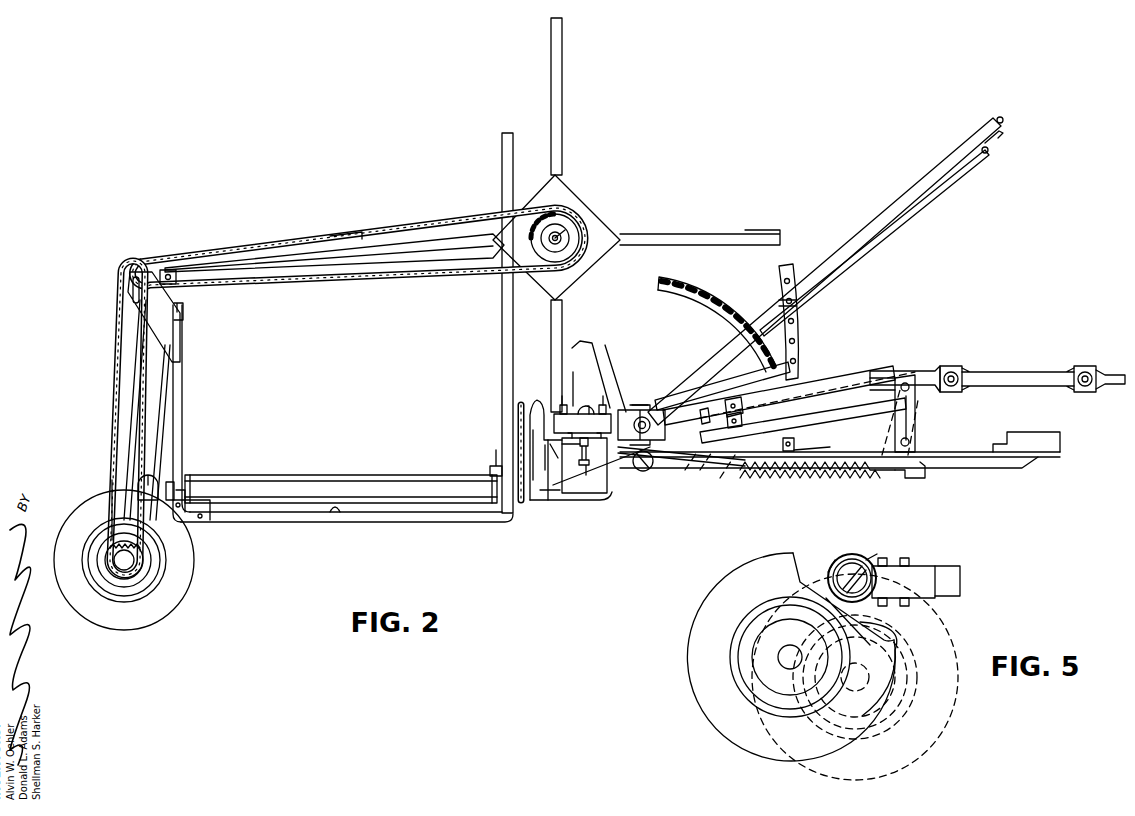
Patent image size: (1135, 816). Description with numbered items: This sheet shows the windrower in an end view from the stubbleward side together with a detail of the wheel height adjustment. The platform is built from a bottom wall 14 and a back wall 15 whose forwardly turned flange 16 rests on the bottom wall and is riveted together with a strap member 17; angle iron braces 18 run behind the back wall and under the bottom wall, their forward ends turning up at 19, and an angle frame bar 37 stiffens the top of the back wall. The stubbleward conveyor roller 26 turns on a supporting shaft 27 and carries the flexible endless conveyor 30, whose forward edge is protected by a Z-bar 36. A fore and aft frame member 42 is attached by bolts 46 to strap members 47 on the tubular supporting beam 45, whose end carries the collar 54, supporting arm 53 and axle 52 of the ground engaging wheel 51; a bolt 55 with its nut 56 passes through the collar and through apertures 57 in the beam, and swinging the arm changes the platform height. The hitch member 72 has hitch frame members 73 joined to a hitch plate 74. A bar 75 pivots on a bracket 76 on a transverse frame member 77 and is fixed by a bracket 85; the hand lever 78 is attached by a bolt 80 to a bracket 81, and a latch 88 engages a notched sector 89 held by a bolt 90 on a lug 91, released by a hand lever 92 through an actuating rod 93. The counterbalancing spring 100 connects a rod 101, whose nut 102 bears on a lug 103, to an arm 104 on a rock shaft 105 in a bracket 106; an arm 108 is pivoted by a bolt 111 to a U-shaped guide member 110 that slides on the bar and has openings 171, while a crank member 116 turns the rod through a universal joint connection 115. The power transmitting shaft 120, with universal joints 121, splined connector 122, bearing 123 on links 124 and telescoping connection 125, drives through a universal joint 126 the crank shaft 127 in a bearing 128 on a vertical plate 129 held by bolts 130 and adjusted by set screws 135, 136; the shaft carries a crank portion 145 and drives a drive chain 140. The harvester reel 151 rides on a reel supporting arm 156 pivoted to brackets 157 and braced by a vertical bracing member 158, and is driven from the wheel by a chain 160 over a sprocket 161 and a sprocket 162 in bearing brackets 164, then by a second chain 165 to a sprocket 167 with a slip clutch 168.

In FIG. 2, the bottom wall 14 is at (335, 516).
In FIG. 2, the back wall 15 is at (184, 400).
In FIG. 2, the flange 16 is at (205, 524).
In FIG. 2, the strap member 17 is at (188, 503).
In FIG. 2, the angle iron braces 18 is at (180, 430).
In FIG. 2, the upturned brace ends 19 is at (516, 505).
In FIG. 2, the conveyor roller 26 is at (418, 490).
In FIG. 2, the supporting shaft 27 is at (160, 498).
In FIG. 2, the flexible endless conveyor 30 is at (280, 474).
In FIG. 2, the Z-bar 36 is at (496, 452).
In FIG. 2, the angle frame bar 37 is at (184, 310).
In FIG. 2, the frame member 42 is at (545, 503).
In FIG. 5, the frame member 42 is at (940, 580).
In FIG. 5, the tubular supporting beam 45 is at (846, 566).
In FIG. 5, the bolts 46 is at (902, 556).
In FIG. 5, the strap members 47 is at (910, 566).
In FIG. 2, the ground engaging wheel 51 is at (170, 600).
In FIG. 5, the ground engaging wheel 51 is at (840, 740).
In FIG. 2, the axle 52 is at (125, 565).
In FIG. 5, the axle 52 is at (778, 660).
In FIG. 5, the supporting arm 53 is at (885, 630).
In FIG. 2, the collar 54 is at (150, 482).
In FIG. 5, the collar 54 is at (835, 562).
In FIG. 5, the bolt 55 is at (830, 580).
In FIG. 5, the nut 56 is at (872, 558).
In FIG. 5, the apertures 57 is at (903, 582).
In FIG. 2, the hitch member 72 is at (973, 476).
In FIG. 2, the hitch frame members 73 is at (990, 465).
In FIG. 2, the hitch plate 74 is at (1050, 432).
In FIG. 2, the bar 75 is at (720, 388).
In FIG. 2, the bracket 76 is at (552, 444).
In FIG. 2, the transverse frame member 77 is at (566, 448).
In FIG. 2, the hand lever 78 is at (862, 220).
In FIG. 2, the bolt 80 is at (790, 303).
In FIG. 2, the bracket 81 is at (798, 340).
In FIG. 2, the bracket 85 is at (660, 468).
In FIG. 2, the latch 88 is at (700, 306).
In FIG. 2, the notched sector 89 is at (690, 285).
In FIG. 2, the bolt 90 is at (796, 442).
In FIG. 2, the lug 91 is at (818, 446).
In FIG. 2, the hand lever 92 is at (1004, 134).
In FIG. 2, the actuating rod 93 is at (958, 163).
In FIG. 2, the counterbalancing spring 100 is at (830, 478).
In FIG. 2, the rod 101 is at (686, 474).
In FIG. 2, the nut 102 is at (718, 475).
In FIG. 2, the lug 103 is at (722, 470).
In FIG. 2, the arm 104 is at (908, 478).
In FIG. 2, the rock shaft 105 is at (898, 385).
In FIG. 2, the bracket 106 is at (914, 412).
In FIG. 2, the arm 108 is at (808, 418).
In FIG. 2, the U-shaped guide member 110 is at (706, 426).
In FIG. 2, the bolt 111 is at (740, 428).
In FIG. 2, the universal joint connection 115 is at (643, 471).
In FIG. 2, the crank member 116 is at (616, 378).
In FIG. 2, the power transmitting shaft 120 is at (925, 372).
In FIG. 2, the universal joints 121 is at (962, 368).
In FIG. 2, the splined connector 122 is at (1118, 370).
In FIG. 2, the bearing 123 is at (940, 394).
In FIG. 2, the links 124 is at (917, 431).
In FIG. 2, the telescoping connection 125 is at (684, 420).
In FIG. 2, the universal joint 126 is at (643, 406).
In FIG. 2, the crank shaft 127 is at (618, 408).
In FIG. 2, the bearing 128 is at (582, 415).
In FIG. 2, the vertical plate 129 is at (606, 466).
In FIG. 2, the bolts 130 is at (592, 345).
In FIG. 2, the set screws 135 is at (573, 377).
In FIG. 2, the set screw 136 is at (584, 463).
In FIG. 2, the drive chain 140 is at (515, 443).
In FIG. 2, the crank portion 145 is at (536, 403).
In FIG. 2, the harvester reel 151 is at (563, 106).
In FIG. 2, the reel supporting arm 156 is at (276, 252).
In FIG. 2, the brackets 157 is at (166, 266).
In FIG. 2, the vertical bracing member 158 is at (500, 168).
In FIG. 2, the chain 160 is at (112, 510).
In FIG. 2, the sprocket 161 is at (110, 540).
In FIG. 2, the sprocket 162 is at (132, 262).
In FIG. 2, the bearing brackets 164 is at (140, 312).
In FIG. 2, the second chain 165 is at (440, 220).
In FIG. 2, the sprocket 167 is at (565, 228).
In FIG. 2, the slip clutch 168 is at (570, 240).
In FIG. 2, the openings 171 is at (736, 396).